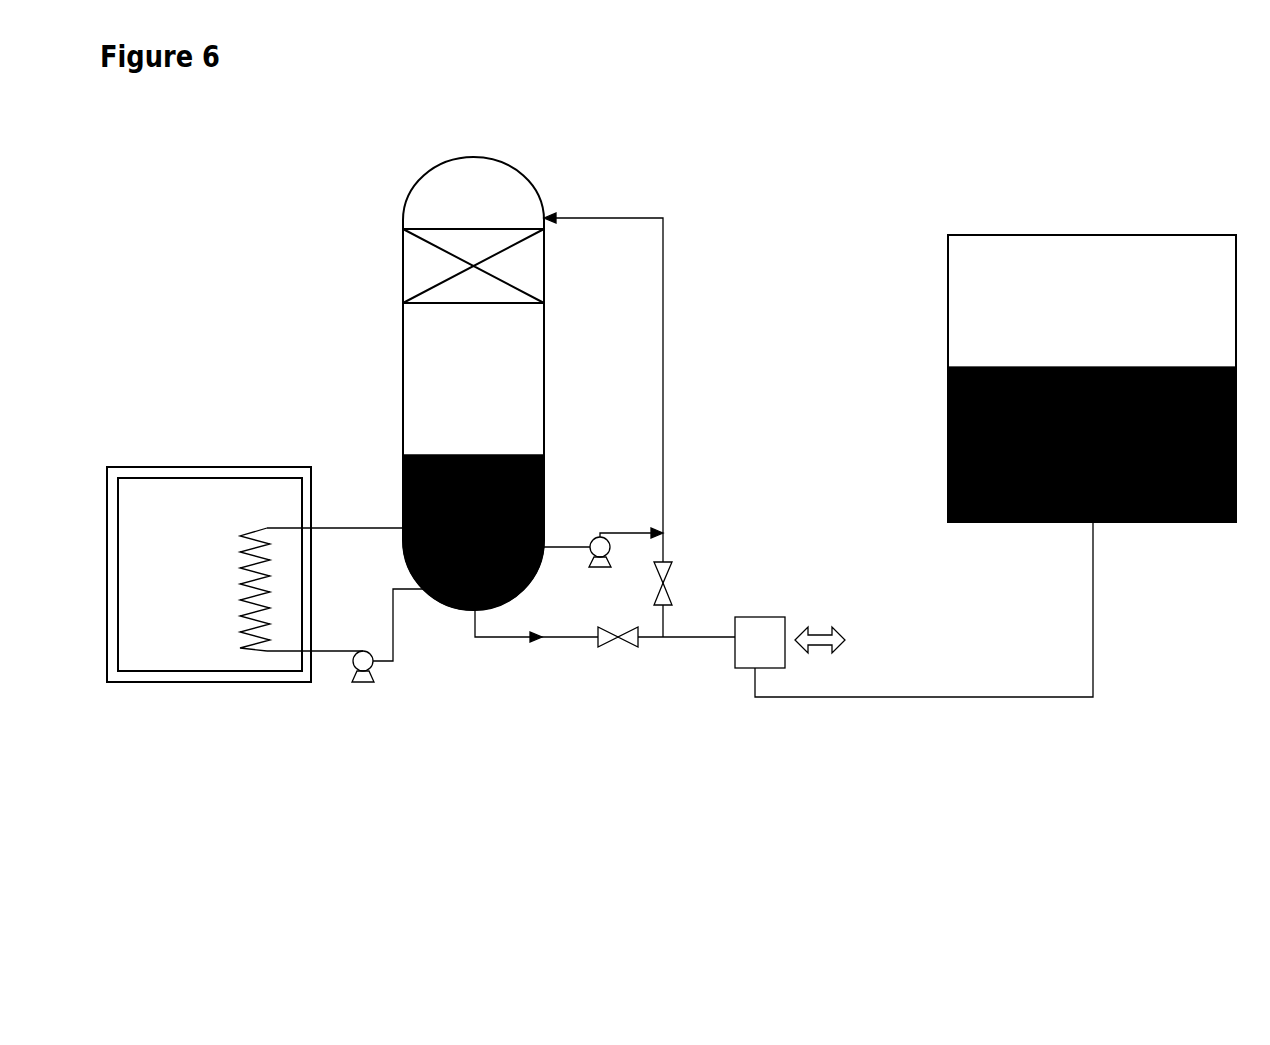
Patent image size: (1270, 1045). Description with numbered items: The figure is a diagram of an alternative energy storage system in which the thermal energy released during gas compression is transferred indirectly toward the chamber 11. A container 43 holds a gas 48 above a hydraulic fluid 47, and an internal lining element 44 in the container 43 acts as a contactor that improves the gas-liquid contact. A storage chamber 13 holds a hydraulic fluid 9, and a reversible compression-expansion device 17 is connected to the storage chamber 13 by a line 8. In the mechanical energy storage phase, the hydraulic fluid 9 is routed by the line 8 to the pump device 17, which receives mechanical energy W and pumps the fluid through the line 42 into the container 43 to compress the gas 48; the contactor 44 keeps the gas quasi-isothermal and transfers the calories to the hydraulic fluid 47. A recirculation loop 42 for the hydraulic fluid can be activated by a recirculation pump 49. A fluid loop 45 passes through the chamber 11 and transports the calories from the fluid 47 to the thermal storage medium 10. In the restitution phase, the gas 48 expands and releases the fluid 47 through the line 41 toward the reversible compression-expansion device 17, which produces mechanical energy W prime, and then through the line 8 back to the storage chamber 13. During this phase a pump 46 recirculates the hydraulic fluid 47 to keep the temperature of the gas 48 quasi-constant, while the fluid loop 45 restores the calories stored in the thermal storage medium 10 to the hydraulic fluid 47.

The line 8 is at (1093, 663).
The hydraulic fluid 9 is at (948, 450).
The thermal storage medium 10 is at (202, 540).
The chamber 11 is at (232, 682).
The storage chamber 13 is at (948, 283).
The P-T device 17 is at (735, 653).
The line 41 is at (572, 640).
The recirculation loop 42 is at (617, 217).
The container 43 is at (412, 190).
The internal lining element 44 is at (432, 260).
The fluid loop 45 is at (370, 528).
The pump 46 is at (358, 683).
The hydraulic fluid 47 is at (517, 455).
The gas 48 is at (458, 352).
The recirculation pump 49 is at (595, 537).